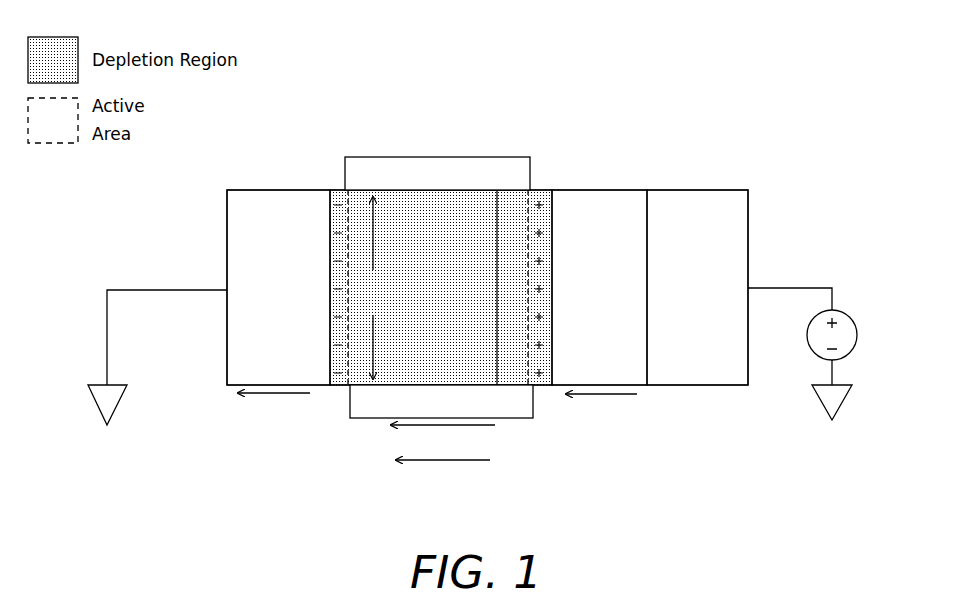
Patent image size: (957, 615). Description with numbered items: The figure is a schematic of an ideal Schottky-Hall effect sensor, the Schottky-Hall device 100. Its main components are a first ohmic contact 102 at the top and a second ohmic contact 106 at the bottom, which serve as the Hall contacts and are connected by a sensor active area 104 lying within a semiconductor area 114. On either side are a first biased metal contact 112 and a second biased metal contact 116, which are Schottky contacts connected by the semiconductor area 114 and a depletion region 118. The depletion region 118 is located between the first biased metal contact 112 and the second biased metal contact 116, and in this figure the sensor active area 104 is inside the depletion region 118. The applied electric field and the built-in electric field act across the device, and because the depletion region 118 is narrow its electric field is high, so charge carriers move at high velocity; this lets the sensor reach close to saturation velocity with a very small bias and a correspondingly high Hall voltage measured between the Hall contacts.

The Schottky-Hall device 100 is at (517, 73).
The first ohmic contact 102 is at (532, 171).
The sensor active area 104 is at (387, 217).
The second ohmic contact 106 is at (533, 403).
The first biased metal contact 112 is at (698, 385).
The semiconductor area 114 is at (622, 190).
The second biased metal contact 116 is at (227, 385).
The depletion region 118 is at (330, 248).